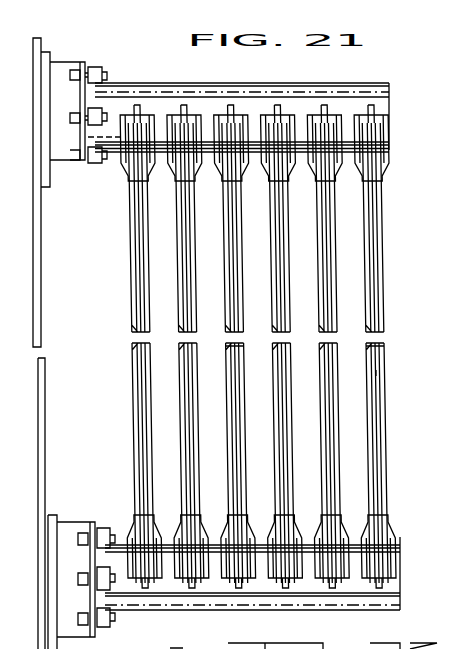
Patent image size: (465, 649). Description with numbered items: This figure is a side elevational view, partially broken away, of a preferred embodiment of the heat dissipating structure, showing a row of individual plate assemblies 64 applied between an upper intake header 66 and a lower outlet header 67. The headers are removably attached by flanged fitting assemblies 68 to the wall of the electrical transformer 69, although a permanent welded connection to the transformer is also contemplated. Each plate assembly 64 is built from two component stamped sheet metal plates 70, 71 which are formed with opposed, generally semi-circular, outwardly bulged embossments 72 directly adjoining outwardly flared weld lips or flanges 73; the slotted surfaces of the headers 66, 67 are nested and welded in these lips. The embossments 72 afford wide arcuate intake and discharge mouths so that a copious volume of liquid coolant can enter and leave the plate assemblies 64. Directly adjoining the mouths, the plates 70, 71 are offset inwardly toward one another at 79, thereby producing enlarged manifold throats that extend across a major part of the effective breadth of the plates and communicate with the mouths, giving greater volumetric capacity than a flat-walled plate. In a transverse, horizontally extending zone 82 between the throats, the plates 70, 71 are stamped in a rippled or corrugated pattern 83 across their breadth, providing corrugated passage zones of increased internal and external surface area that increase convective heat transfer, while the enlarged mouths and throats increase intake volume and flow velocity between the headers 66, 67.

The plate assembly 64 is at (133, 424).
The upper intake header 66 is at (357, 79).
The lower outlet header 67 is at (403, 597).
The flanged fitting assembly 68 is at (70, 60).
The electrical transformer 69 is at (49, 387).
The stamped sheet metal plate 70 is at (242, 268).
The stamped sheet metal plate 71 is at (224, 244).
The outwardly bulged embossment 72 is at (131, 172).
The weld lip 73 is at (123, 117).
The inward offset 79 is at (241, 209).
The transverse horizontal zone 82 is at (247, 369).
The rippled or corrugated pattern 83 is at (381, 373).